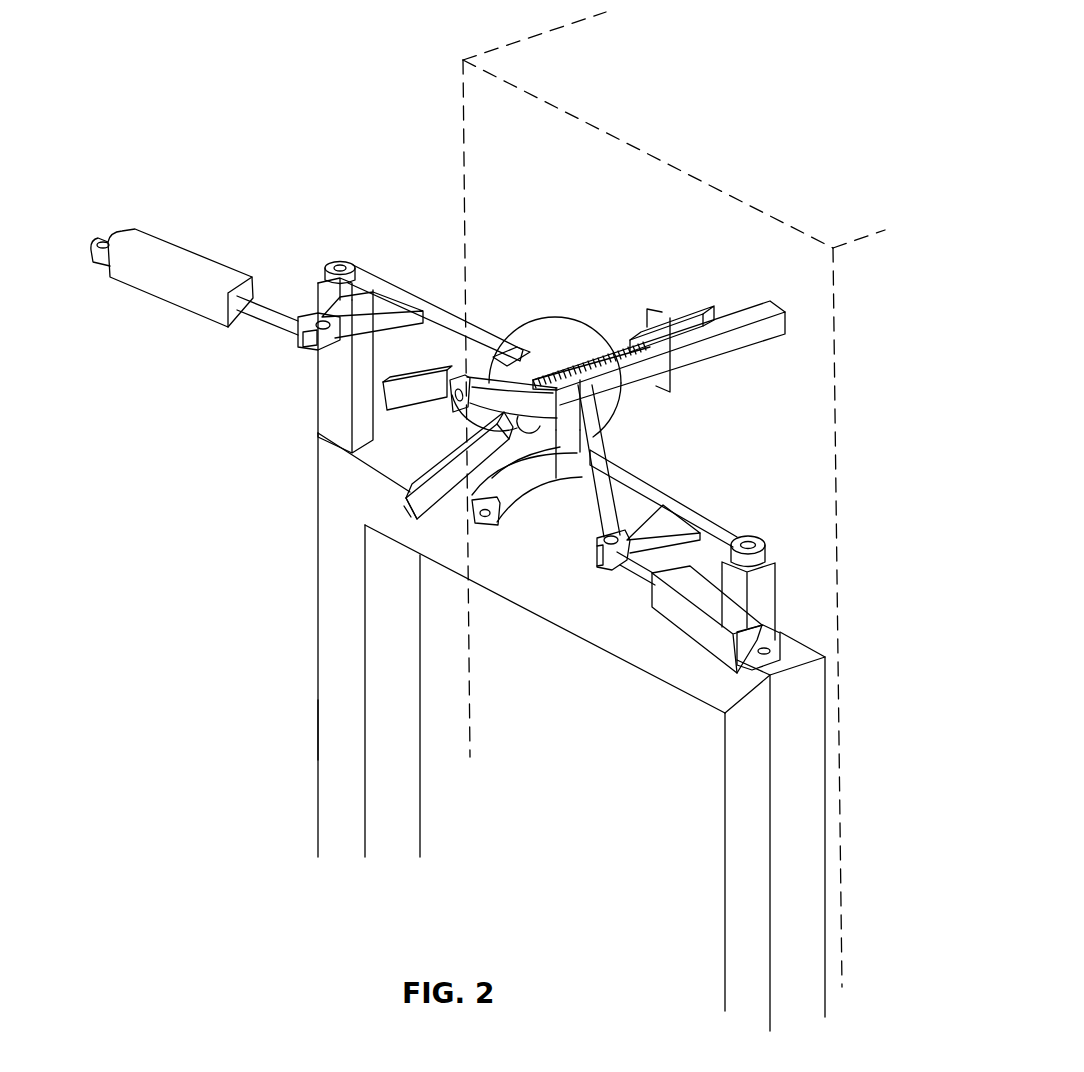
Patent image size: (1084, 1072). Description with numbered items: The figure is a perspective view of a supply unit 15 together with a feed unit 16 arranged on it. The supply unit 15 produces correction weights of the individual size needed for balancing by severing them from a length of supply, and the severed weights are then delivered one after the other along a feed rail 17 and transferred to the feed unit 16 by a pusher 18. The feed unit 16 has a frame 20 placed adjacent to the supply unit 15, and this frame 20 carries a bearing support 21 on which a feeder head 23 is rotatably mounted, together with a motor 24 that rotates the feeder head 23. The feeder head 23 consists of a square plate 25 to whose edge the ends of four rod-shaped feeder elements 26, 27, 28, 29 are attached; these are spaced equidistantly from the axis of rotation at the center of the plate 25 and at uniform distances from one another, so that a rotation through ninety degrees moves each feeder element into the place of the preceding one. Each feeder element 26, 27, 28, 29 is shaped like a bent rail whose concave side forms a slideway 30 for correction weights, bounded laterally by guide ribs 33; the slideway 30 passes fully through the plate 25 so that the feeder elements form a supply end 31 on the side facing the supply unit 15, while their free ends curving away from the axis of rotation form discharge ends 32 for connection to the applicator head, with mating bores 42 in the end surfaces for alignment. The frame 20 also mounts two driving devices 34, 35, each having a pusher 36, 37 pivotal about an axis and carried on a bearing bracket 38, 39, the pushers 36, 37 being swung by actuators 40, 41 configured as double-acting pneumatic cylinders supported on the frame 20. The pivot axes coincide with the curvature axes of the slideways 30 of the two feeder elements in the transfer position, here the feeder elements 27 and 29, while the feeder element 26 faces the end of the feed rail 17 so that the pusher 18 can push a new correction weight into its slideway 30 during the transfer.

The supply unit 15 is at (452, 115).
The feed unit 16 is at (308, 543).
The feed rail 17 is at (766, 330).
The pusher 18 is at (647, 334).
The frame 20 is at (330, 738).
The bearing support 21 is at (608, 507).
The feeder head 23 is at (553, 312).
The motor 24 is at (556, 342).
The square plate 25 is at (575, 437).
The feeder element 26 is at (575, 405).
The feeder element 27 is at (508, 480).
The feeder element 28 is at (447, 462).
The feeder element 29 is at (440, 382).
The slideway 30 is at (540, 487).
The supply end 31 is at (580, 478).
The discharge end 32 is at (465, 378).
The guide rib 33 is at (517, 385).
The driving device 34 is at (340, 262).
The driving device 35 is at (757, 535).
The pusher 36 is at (434, 312).
The pusher 37 is at (688, 505).
The bearing bracket 38 is at (332, 404).
The bearing bracket 39 is at (770, 600).
The actuator 40 is at (178, 250).
The actuator 41 is at (703, 625).
The mating bore 42 is at (415, 512).